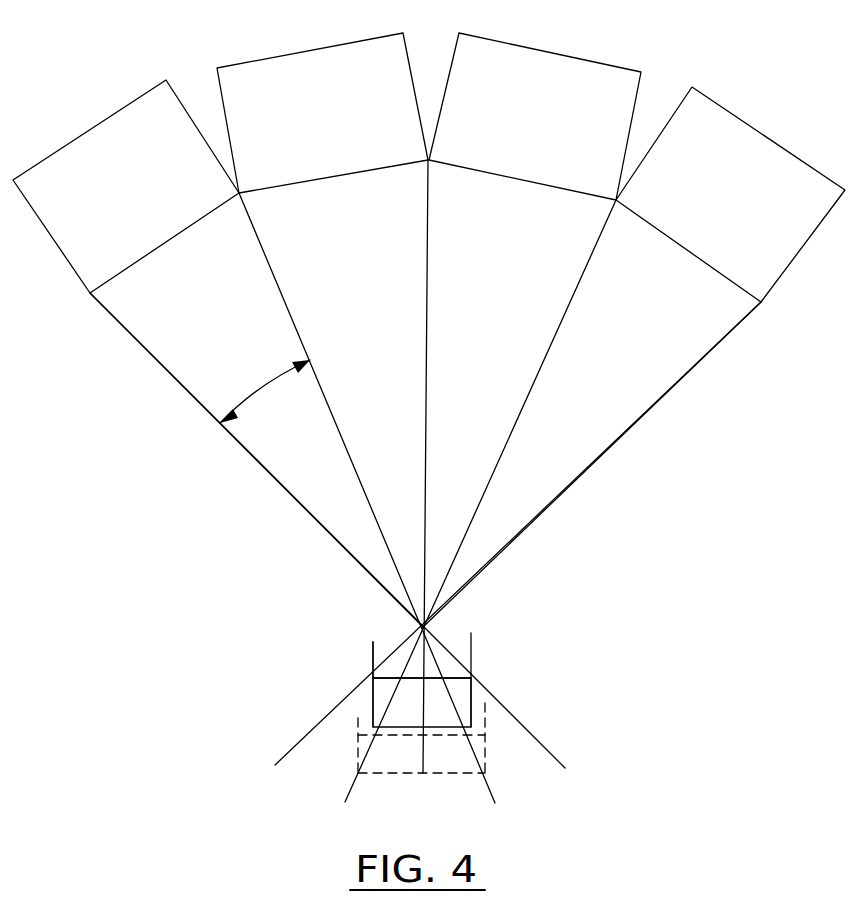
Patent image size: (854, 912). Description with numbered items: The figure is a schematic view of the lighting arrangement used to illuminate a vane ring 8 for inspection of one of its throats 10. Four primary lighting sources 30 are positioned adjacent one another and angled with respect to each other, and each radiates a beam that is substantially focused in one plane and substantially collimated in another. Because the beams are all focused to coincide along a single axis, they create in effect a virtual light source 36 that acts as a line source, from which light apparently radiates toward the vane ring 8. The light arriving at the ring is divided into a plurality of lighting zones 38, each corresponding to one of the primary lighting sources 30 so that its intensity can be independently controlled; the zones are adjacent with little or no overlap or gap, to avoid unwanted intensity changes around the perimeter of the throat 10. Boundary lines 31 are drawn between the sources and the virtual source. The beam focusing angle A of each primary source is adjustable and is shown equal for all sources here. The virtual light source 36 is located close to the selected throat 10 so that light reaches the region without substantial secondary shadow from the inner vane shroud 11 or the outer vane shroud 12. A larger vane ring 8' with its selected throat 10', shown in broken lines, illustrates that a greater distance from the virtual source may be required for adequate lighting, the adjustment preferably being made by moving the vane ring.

The primary lighting source 30 is at (115, 112).
The zone boundary lines 31 is at (167, 333).
The beam focusing angle A is at (265, 388).
The virtual light source 36 is at (416, 623).
The lighting zone 38 is at (392, 653).
The outer vane shroud 12 is at (373, 657).
The inner vane shroud 11 is at (473, 638).
The vane ring 8 is at (474, 680).
The throat 10 is at (364, 691).
The throat of larger vane ring 10' is at (360, 745).
The larger vane ring 8' is at (477, 738).